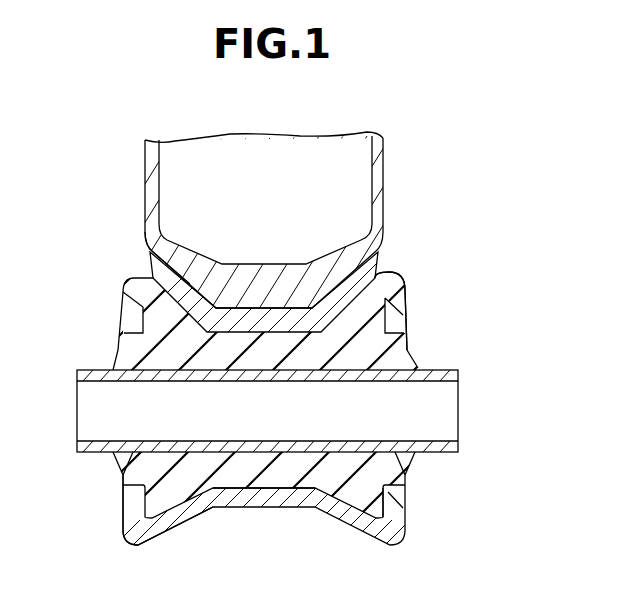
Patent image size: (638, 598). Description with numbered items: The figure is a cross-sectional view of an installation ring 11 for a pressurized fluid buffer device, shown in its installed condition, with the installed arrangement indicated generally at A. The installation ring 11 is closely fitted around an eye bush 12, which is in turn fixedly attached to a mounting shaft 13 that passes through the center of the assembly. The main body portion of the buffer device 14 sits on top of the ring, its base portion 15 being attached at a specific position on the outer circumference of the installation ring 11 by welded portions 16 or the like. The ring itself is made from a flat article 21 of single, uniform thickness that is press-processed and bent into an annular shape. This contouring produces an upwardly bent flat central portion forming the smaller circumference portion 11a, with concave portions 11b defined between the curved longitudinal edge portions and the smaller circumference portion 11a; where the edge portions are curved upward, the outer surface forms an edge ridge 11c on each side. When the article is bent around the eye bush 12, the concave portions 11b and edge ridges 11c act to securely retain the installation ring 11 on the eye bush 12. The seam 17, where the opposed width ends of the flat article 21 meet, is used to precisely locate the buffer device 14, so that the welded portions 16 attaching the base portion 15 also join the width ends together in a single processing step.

The installation ring 11 is at (284, 381).
The flat article 21 is at (284, 381).
The smaller circumference portion 11a is at (290, 482).
The concave portions 11b is at (410, 275).
The edge ridge 11c is at (398, 512).
The eye bush 12 is at (127, 477).
The mounting shaft 13 is at (450, 368).
The buffer device 14 is at (384, 146).
The base portion 15 is at (148, 240).
The welded portions 16 is at (150, 266).
The seam 17 is at (125, 327).
The mounting assembly A is at (446, 332).